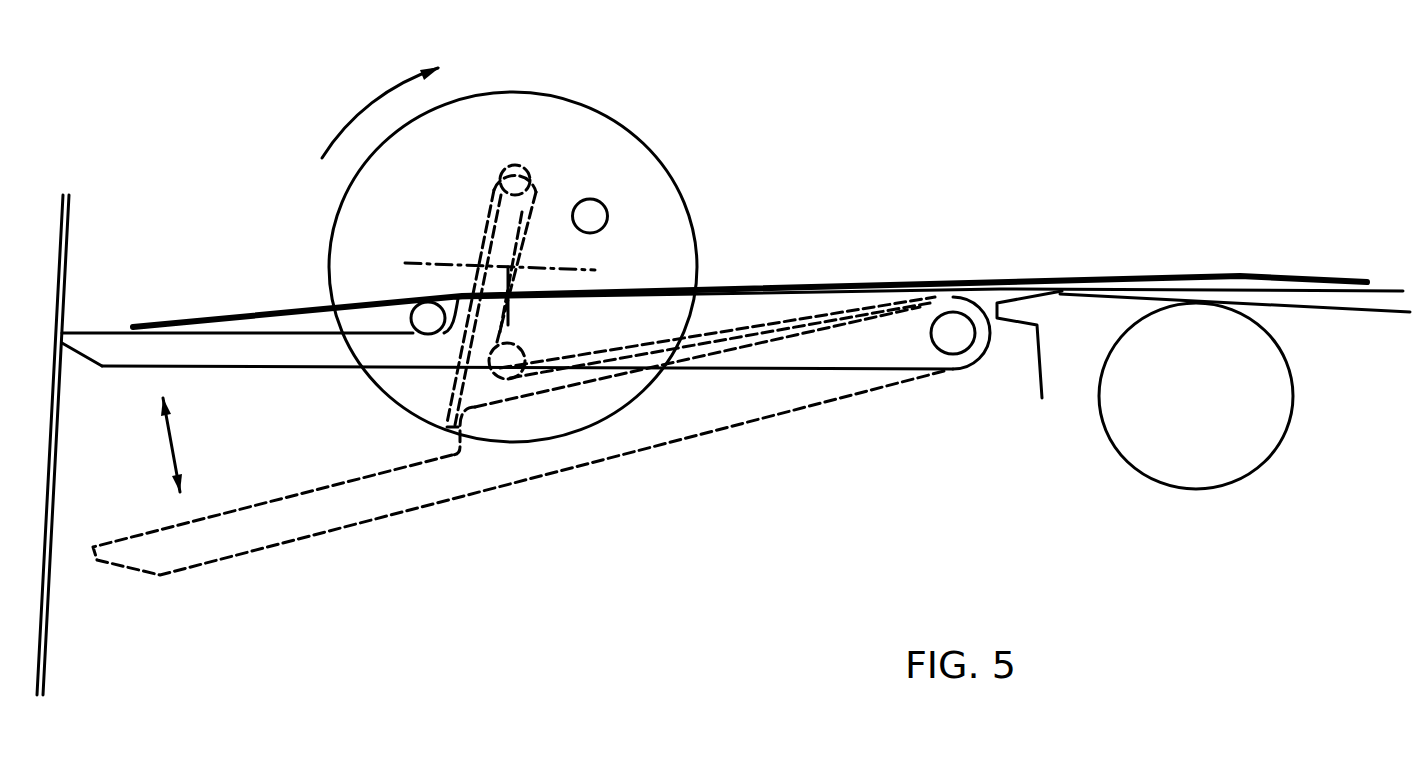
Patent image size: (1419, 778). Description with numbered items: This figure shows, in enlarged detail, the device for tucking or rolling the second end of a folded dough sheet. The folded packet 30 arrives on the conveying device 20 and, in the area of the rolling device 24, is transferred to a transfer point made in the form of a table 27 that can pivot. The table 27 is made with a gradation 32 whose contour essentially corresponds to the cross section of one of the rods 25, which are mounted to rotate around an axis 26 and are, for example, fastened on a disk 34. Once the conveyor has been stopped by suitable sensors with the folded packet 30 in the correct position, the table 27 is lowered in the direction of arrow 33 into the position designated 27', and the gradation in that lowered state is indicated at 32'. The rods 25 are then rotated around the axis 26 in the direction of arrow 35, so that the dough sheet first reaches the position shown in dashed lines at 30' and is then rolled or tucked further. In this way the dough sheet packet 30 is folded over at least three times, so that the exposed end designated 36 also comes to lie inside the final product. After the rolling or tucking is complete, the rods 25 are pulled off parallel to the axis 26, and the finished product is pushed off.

The conveying device 20 is at (1258, 323).
The rolling device 24 is at (560, 230).
The rods 25 is at (590, 199).
The axis 26 is at (513, 265).
The table 27 is at (526, 380).
The lowered position of table 27' is at (520, 484).
The folded packet 30 is at (750, 242).
The first position of dough sheet 30' is at (650, 252).
The gradation 32 is at (321, 261).
The lever in lowered position 32' is at (607, 312).
The arrow 33 is at (172, 448).
The disk 34 is at (488, 132).
The arrow 35 is at (365, 108).
The exposed end 36 is at (457, 433).